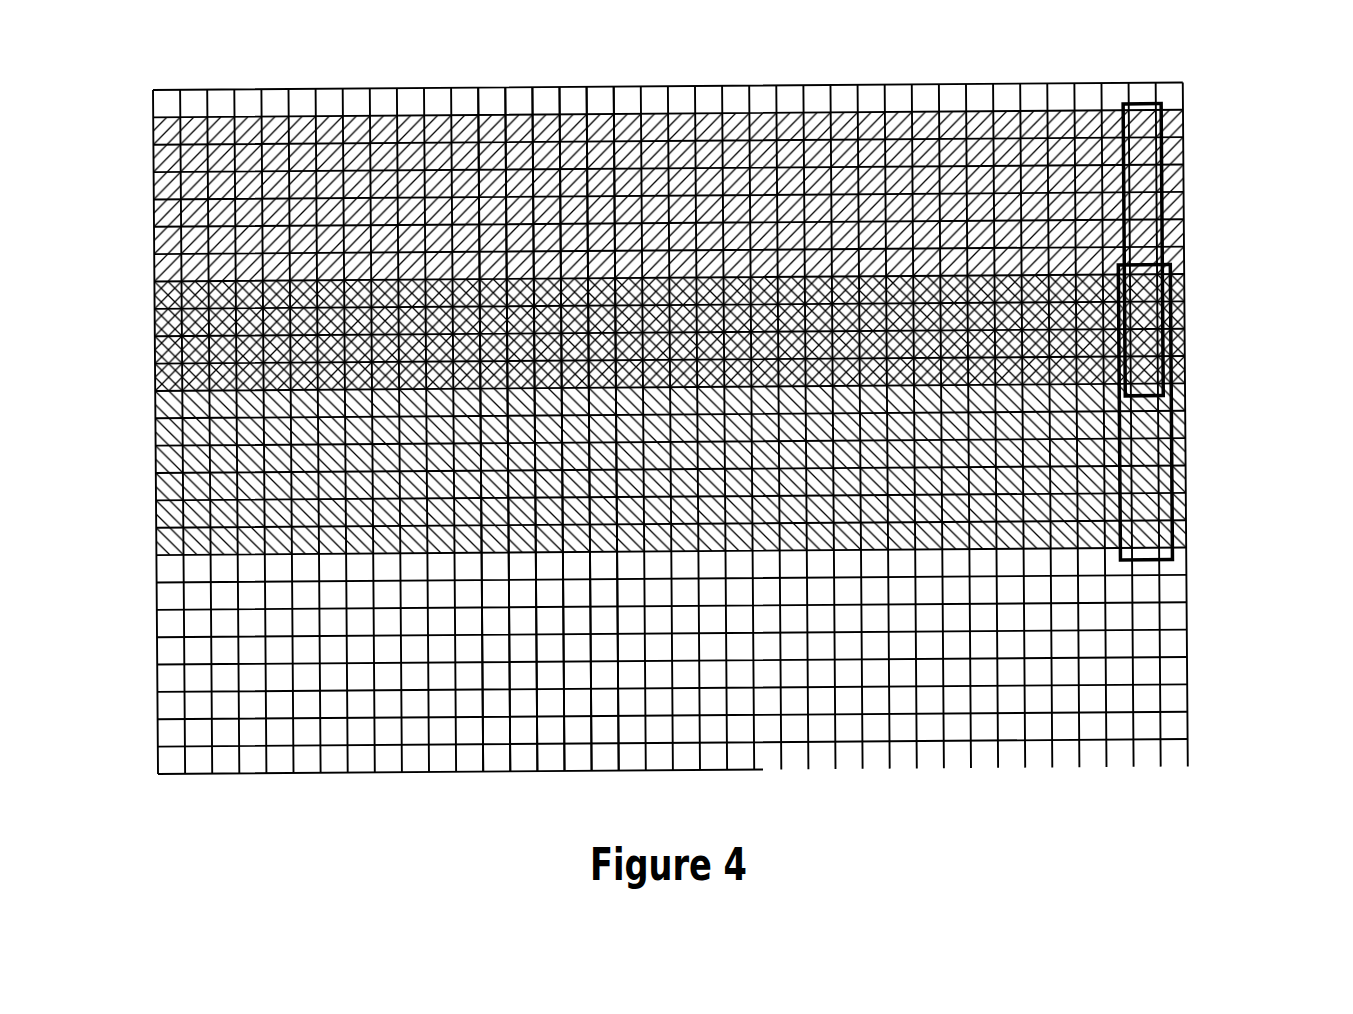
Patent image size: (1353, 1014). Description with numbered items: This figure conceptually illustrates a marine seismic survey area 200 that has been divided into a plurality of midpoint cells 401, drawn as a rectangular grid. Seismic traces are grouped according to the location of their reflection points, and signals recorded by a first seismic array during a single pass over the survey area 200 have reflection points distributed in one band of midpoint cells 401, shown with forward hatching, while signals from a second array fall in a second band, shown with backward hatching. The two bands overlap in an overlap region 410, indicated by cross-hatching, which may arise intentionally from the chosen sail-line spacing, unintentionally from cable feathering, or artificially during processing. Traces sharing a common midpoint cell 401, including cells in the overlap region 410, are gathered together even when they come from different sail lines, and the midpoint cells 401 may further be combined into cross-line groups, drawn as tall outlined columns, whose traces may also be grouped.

The marine seismic survey area 200 is at (122, 618).
The midpoint cells 401 is at (602, 88).
The overlap region 410 is at (140, 283).